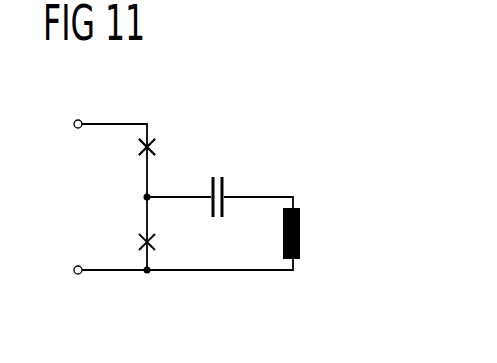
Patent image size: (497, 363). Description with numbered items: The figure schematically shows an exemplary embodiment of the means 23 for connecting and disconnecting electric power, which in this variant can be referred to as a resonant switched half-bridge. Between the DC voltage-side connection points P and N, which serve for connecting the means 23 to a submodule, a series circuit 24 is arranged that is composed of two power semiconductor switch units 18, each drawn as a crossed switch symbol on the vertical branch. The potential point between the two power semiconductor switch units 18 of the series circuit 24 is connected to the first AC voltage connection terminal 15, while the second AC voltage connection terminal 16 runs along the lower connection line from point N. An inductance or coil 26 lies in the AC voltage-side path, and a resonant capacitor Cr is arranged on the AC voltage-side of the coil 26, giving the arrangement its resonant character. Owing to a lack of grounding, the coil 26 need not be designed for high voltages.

The first AC voltage connection terminal 15 is at (267, 197).
The second AC voltage connection terminal 16 is at (222, 271).
The power semiconductor switch unit 18 is at (140, 150).
The means for connecting and disconnecting electric power 23 is at (270, 105).
The series circuit 24 is at (180, 130).
The inductance 26 is at (301, 231).